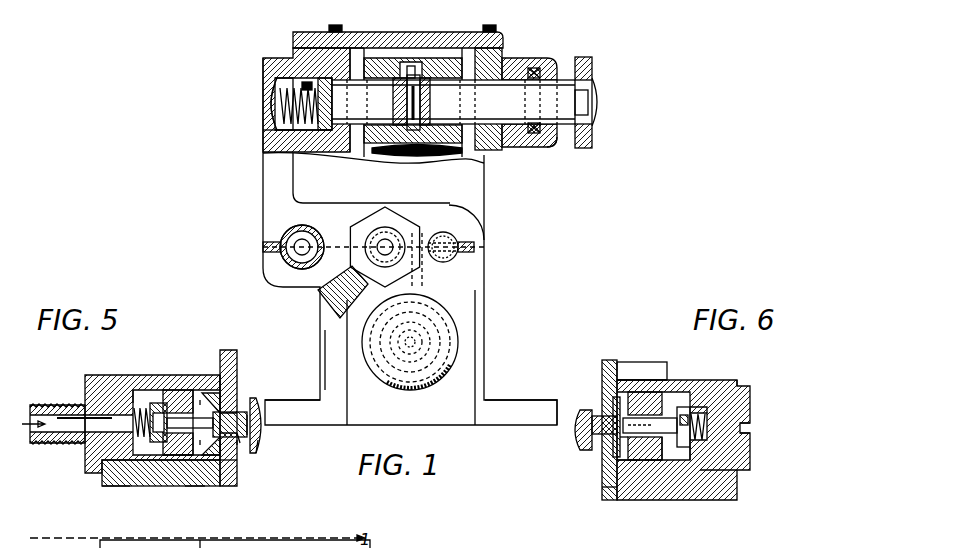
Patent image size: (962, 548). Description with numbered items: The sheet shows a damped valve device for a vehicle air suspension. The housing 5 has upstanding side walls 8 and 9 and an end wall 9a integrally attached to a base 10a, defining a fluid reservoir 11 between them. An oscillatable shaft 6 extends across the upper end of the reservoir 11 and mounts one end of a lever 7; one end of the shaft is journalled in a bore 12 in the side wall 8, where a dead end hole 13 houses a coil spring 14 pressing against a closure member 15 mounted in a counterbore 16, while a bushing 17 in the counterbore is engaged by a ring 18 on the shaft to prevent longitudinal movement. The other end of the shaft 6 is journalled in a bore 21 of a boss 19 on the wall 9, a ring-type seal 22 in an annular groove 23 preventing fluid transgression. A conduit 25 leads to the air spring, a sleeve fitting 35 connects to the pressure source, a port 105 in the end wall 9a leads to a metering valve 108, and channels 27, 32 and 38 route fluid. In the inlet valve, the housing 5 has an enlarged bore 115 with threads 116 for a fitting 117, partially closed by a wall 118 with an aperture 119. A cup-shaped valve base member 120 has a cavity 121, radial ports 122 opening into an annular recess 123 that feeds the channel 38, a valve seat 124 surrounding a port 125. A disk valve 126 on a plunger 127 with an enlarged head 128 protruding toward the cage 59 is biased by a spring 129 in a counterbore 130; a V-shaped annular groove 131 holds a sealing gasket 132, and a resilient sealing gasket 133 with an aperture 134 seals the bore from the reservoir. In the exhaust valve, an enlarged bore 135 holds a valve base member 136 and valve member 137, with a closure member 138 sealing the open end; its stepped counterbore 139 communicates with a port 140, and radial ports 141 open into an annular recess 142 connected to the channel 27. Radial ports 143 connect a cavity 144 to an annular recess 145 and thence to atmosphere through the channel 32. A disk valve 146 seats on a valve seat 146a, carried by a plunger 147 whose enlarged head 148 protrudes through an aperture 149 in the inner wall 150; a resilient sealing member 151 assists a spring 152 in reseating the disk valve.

In FIG. 1, the housing 5 is at (486, 232).
In FIG. 5, the housing 5 is at (92, 490).
In FIG. 6, the housing 5 is at (752, 488).
In FIG. 1, the oscillatable shaft 6 is at (502, 120).
In FIG. 1, the lever 7 is at (593, 68).
In FIG. 1, the side wall 8 is at (265, 145).
In FIG. 1, the side wall 9 is at (484, 168).
In FIG. 1, the end wall 9a is at (465, 300).
In FIG. 1, the base 10a is at (507, 417).
In FIG. 1, the reservoir 11 is at (357, 52).
In FIG. 5, the reservoir 11 is at (227, 383).
In FIG. 1, the bore 12 is at (343, 118).
In FIG. 1, the dead end hole 13 is at (318, 86).
In FIG. 1, the coil spring 14 is at (310, 132).
In FIG. 1, the closure member 15 is at (276, 100).
In FIG. 1, the counterbore 16 is at (266, 80).
In FIG. 1, the bushing 17 is at (303, 80).
In FIG. 1, the ring 18 is at (292, 78).
In FIG. 1, the boss 19 is at (557, 140).
In FIG. 1, the bore 21 is at (495, 83).
In FIG. 1, the ring-type seal 22 is at (537, 72).
In FIG. 1, the annular groove 23 is at (540, 133).
In FIG. 1, the conduit 25 is at (298, 226).
In FIG. 6, the channel 27 is at (752, 407).
In FIG. 6, the channel 32 is at (650, 427).
In FIG. 1, the sleeve fitting 35 is at (392, 230).
In FIG. 1, the channel 38 is at (363, 290).
In FIG. 5, the channel 38 is at (180, 422).
In FIG. 5, the cage 59 is at (258, 442).
In FIG. 6, the cage 59 is at (595, 440).
In FIG. 1, the port 105 is at (418, 283).
In FIG. 1, the metering valve 108 is at (445, 232).
In FIG. 5, the enlarged bore 115 is at (193, 400).
In FIG. 5, the threads 116 is at (97, 393).
In FIG. 5, the fitting 117 is at (43, 443).
In FIG. 5, the wall 118 is at (223, 397).
In FIG. 5, the aperture 119 is at (243, 440).
In FIG. 5, the valve base member 120 is at (230, 486).
In FIG. 5, the cavity 121 is at (240, 443).
In FIG. 5, the radial ports 122 is at (213, 397).
In FIG. 5, the annular recess 123 is at (222, 393).
In FIG. 5, the valve seat 124 is at (118, 487).
In FIG. 5, the port 125 is at (195, 486).
In FIG. 5, the disk valve 126 is at (153, 407).
In FIG. 5, the plunger 127 is at (252, 394).
In FIG. 5, the enlarged head 128 is at (255, 433).
In FIG. 5, the spring 129 is at (140, 393).
In FIG. 5, the counterbore 130 is at (137, 440).
In FIG. 5, the annular groove 131 is at (172, 400).
In FIG. 5, the sealing gasket 132 is at (165, 453).
In FIG. 5, the sealing gasket 133 is at (220, 390).
In FIG. 5, the aperture 134 is at (235, 424).
In FIG. 6, the enlarged bore 135 is at (653, 503).
In FIG. 6, the valve base member 136 is at (633, 500).
In FIG. 6, the valve member 137 is at (668, 500).
In FIG. 6, the closure member 138 is at (752, 457).
In FIG. 6, the stepped counterbore 139 is at (682, 397).
In FIG. 6, the port 140 is at (673, 407).
In FIG. 6, the radial ports 141 is at (752, 388).
In FIG. 6, the annular recess 142 is at (700, 400).
In FIG. 6, the radial ports 143 is at (610, 487).
In FIG. 6, the cavity 144 is at (603, 453).
In FIG. 6, the annular recess 145 is at (653, 400).
In FIG. 6, the disk valve 146 is at (692, 465).
In FIG. 6, the valve seat 146a is at (707, 486).
In FIG. 6, the plunger 147 is at (630, 383).
In FIG. 6, the enlarged head 148 is at (600, 410).
In FIG. 6, the aperture 149 is at (590, 433).
In FIG. 6, the inner wall 150 is at (600, 443).
In FIG. 6, the resilient sealing member 151 is at (606, 462).
In FIG. 6, the spring 152 is at (718, 433).